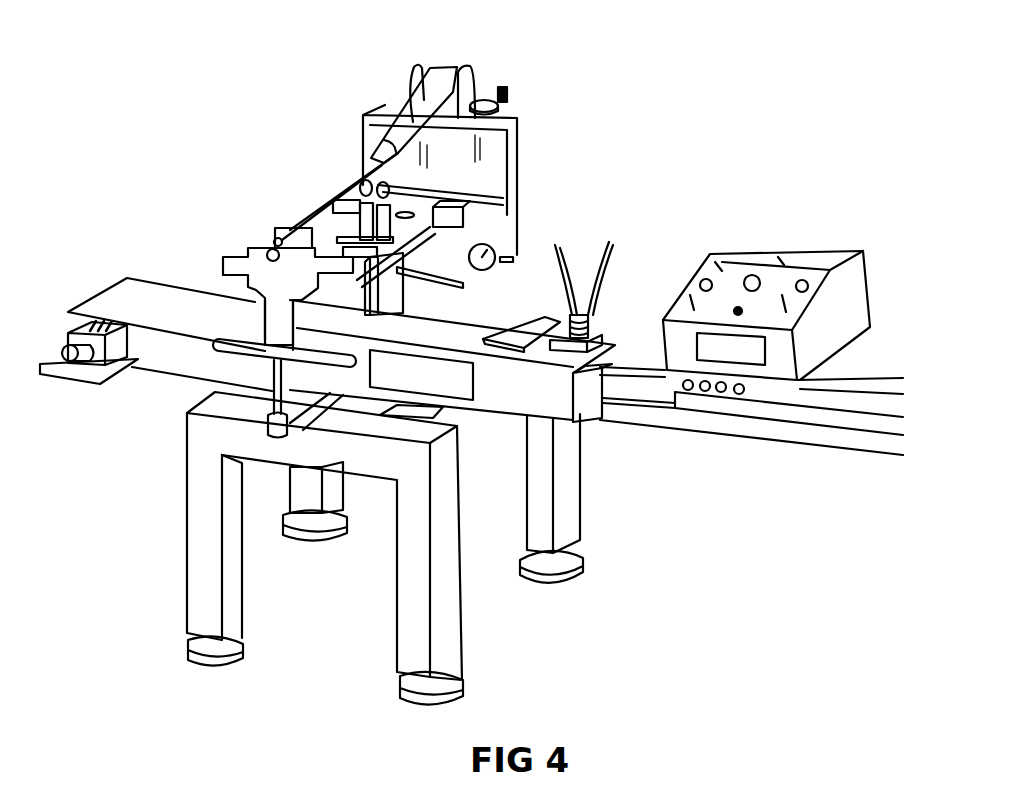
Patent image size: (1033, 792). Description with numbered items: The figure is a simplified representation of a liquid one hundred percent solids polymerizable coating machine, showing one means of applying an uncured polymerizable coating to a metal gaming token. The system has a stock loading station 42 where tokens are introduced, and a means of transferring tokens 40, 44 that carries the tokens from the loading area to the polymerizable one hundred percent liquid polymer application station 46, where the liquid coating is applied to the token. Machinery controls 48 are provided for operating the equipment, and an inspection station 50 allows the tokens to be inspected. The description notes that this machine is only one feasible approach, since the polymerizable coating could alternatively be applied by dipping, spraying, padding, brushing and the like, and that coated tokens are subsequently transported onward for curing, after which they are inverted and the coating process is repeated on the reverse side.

The means of transferring tokens 40 is at (204, 281).
The stock loading station 42 is at (610, 233).
The means of transferring tokens 44 is at (502, 316).
The polymerizable 100% liquid polymer application station 46 is at (383, 297).
The machinery controls 48 is at (800, 244).
The inspection station 50 is at (108, 320).